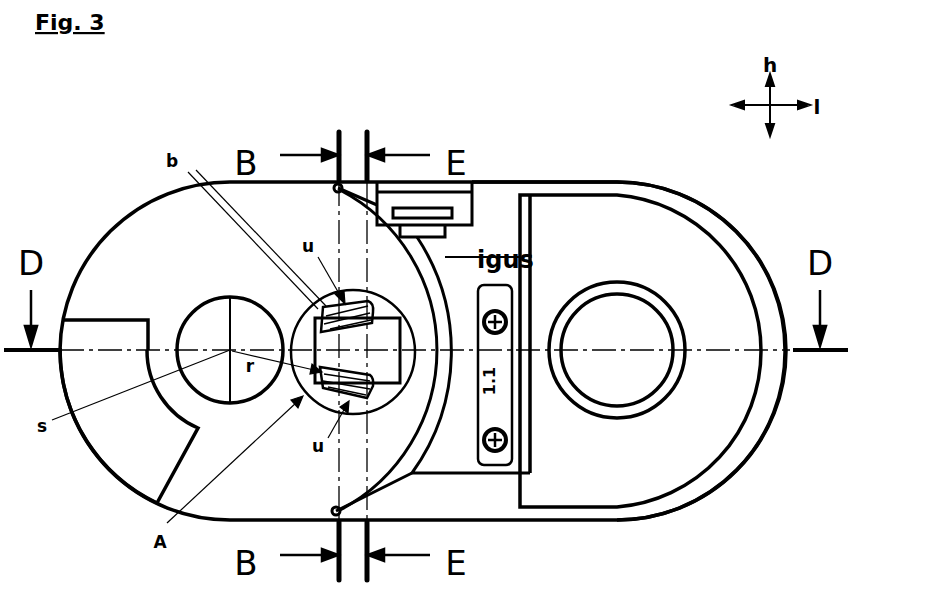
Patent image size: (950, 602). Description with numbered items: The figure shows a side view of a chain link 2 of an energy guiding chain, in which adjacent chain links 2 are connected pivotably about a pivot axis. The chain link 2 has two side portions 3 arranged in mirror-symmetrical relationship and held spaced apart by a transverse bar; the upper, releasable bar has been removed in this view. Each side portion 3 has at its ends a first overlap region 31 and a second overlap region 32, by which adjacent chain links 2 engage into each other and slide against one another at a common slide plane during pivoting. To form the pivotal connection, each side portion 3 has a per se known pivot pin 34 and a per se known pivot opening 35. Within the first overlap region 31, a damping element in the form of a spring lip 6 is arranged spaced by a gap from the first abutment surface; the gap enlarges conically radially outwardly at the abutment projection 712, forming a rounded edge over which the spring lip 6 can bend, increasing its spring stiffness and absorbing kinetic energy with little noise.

The chain link 2 is at (612, 170).
The side portion 3 is at (663, 186).
The spring lip 6 is at (322, 338).
The first overlap region 31 is at (143, 500).
The second overlap region 32 is at (735, 483).
The pivot pin 34 is at (188, 388).
The pivot opening 35 is at (640, 400).
The abutment projection 712 is at (400, 380).